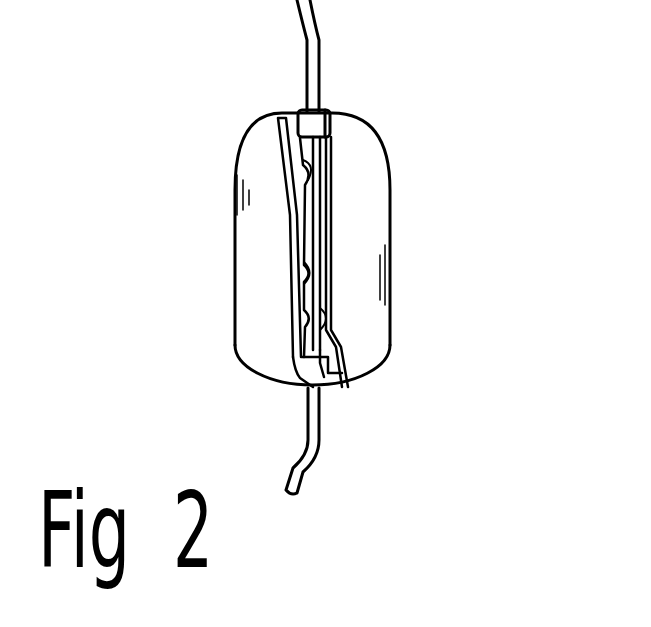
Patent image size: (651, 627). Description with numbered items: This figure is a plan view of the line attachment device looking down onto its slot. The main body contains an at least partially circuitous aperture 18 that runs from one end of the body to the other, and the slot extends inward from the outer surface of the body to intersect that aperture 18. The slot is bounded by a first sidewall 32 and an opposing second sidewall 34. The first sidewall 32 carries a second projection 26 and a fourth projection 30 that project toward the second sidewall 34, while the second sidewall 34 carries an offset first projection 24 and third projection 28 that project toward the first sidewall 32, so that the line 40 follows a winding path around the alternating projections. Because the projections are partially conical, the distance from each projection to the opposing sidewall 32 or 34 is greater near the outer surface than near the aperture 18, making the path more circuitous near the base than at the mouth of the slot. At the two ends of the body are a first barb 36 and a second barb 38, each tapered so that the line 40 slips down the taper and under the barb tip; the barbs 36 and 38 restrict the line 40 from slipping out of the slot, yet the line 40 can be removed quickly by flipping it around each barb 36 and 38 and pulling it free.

The aperture 18 is at (302, 252).
The first projection 24 is at (283, 153).
The second projection 26 is at (335, 215).
The third projection 28 is at (292, 275).
The fourth projection 30 is at (335, 322).
The first sidewall 32 is at (333, 248).
The second sidewall 34 is at (297, 243).
The first barb 36 is at (336, 380).
The second barb 38 is at (310, 125).
The line 40 is at (297, 445).